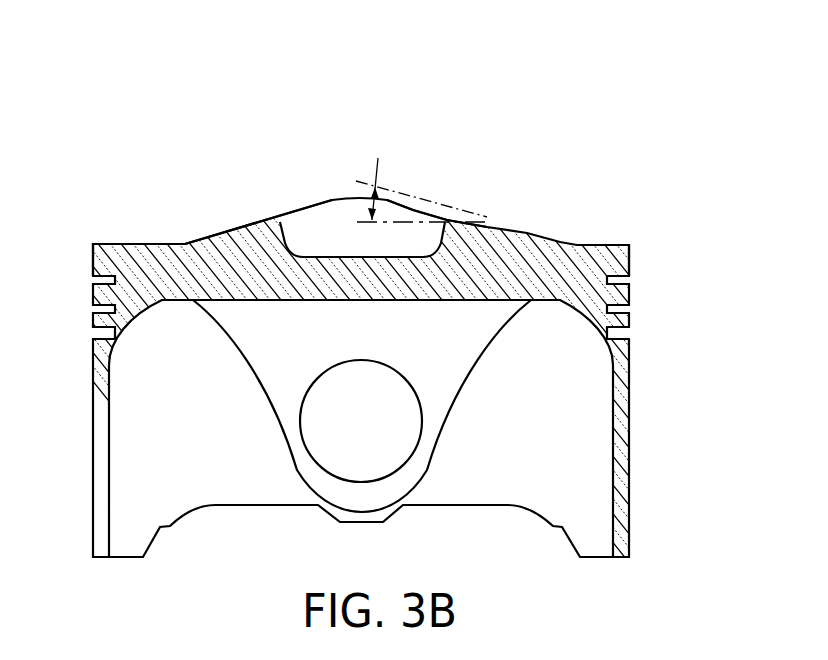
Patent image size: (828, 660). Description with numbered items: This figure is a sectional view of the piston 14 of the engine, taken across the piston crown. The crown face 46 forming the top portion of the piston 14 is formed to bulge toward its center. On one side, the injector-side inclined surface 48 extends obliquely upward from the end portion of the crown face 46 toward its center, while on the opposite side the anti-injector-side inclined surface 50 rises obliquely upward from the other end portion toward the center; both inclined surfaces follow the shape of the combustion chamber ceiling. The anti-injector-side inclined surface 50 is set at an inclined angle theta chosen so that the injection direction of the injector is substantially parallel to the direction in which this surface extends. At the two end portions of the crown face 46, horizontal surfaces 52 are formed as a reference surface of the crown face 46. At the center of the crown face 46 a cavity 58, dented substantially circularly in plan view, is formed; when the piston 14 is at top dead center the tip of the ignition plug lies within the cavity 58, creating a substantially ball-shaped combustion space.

The piston 14 is at (633, 318).
The crown face 46 is at (165, 243).
The injector-side inclined surface 48 is at (225, 232).
The anti-injector-side inclined surface 50 is at (427, 207).
The horizontal surfaces 52 is at (115, 243).
The cavity 58 is at (331, 228).